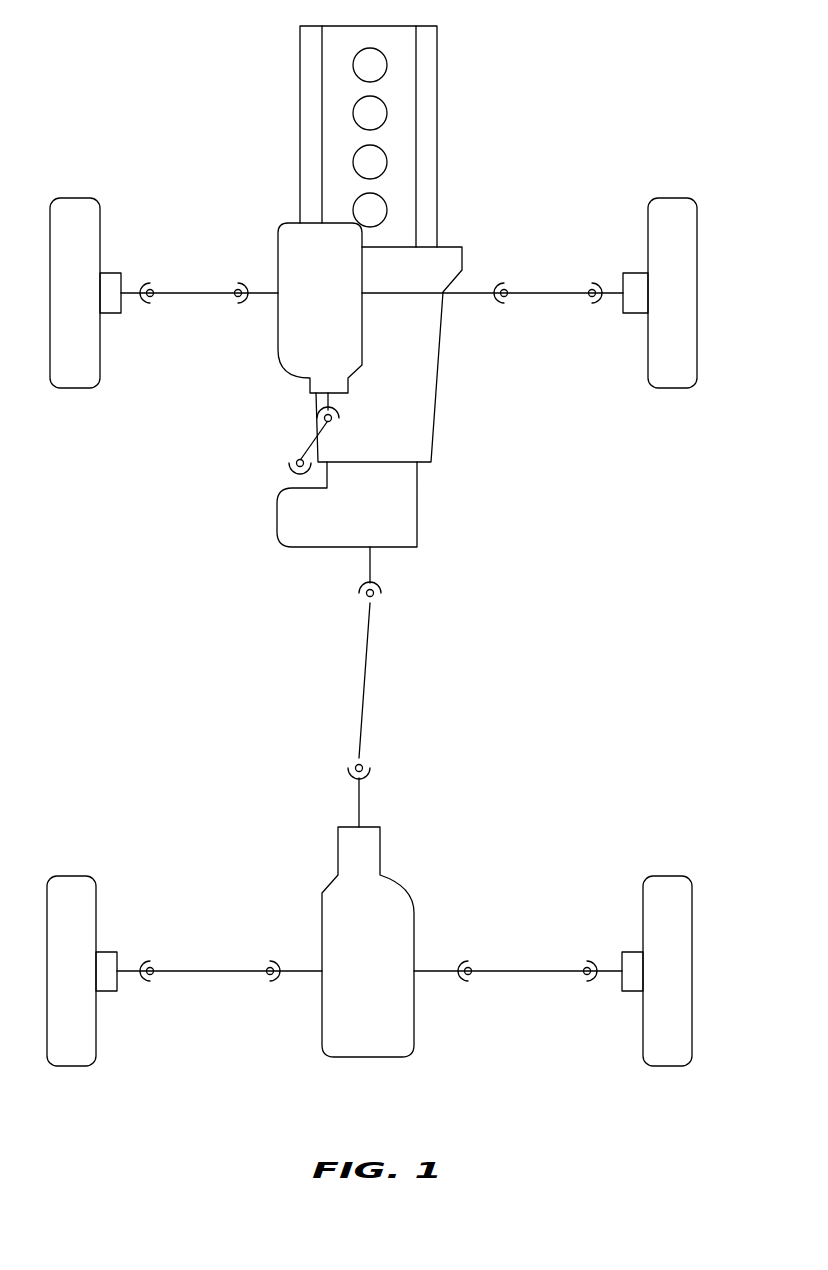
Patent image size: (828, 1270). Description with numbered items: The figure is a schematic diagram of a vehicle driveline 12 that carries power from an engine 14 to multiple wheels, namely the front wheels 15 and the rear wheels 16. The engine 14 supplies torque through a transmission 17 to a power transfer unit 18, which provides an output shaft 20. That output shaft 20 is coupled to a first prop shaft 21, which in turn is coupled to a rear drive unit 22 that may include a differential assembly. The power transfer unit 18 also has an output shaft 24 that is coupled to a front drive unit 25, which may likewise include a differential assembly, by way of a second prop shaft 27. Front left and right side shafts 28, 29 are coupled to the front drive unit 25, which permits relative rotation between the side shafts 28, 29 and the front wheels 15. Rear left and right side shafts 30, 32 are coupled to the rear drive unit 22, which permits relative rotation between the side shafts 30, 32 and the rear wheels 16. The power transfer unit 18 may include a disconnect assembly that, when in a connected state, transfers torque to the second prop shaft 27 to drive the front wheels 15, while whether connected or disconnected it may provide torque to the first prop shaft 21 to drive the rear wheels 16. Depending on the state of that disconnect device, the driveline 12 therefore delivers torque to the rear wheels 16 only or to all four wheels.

The vehicle driveline 12 is at (484, 638).
The engine 14 is at (437, 77).
The front wheels 15 is at (78, 198).
The rear wheels 16 is at (72, 876).
The transmission 17 is at (438, 357).
The power transfer unit 18 is at (417, 513).
The output shaft 20 is at (370, 565).
The first prop shaft 21 is at (368, 640).
The rear drive unit 22 is at (365, 1057).
The output shaft 24 is at (298, 481).
The front drive unit 25 is at (278, 345).
The second prop shaft 27 is at (312, 443).
The front left side shaft 28 is at (198, 284).
The front right side shaft 29 is at (548, 284).
The rear left side shaft 30 is at (210, 961).
The rear right side shaft 32 is at (532, 961).